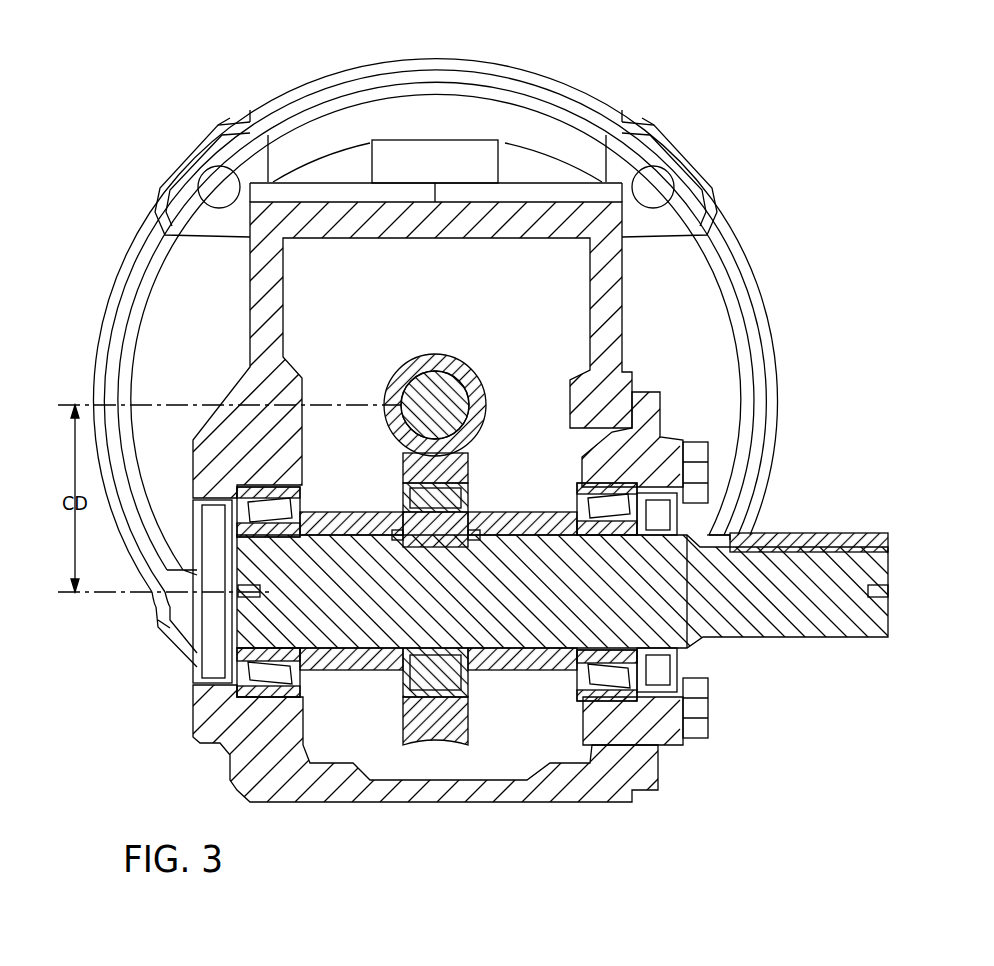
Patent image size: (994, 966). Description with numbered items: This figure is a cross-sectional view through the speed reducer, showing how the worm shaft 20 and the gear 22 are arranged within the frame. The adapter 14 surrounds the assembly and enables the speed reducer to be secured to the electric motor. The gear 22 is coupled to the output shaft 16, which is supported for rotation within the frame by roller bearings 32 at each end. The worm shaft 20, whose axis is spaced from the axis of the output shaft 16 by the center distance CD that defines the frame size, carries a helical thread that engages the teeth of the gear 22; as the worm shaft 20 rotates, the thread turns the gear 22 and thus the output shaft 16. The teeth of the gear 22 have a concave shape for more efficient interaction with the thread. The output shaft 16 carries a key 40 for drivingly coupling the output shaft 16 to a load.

The adapter 14 is at (535, 72).
The output shaft 16 is at (792, 622).
The worm shaft 20 is at (470, 367).
The gear 22 is at (470, 457).
The roller bearings 32 is at (225, 747).
The key 40 is at (818, 533).